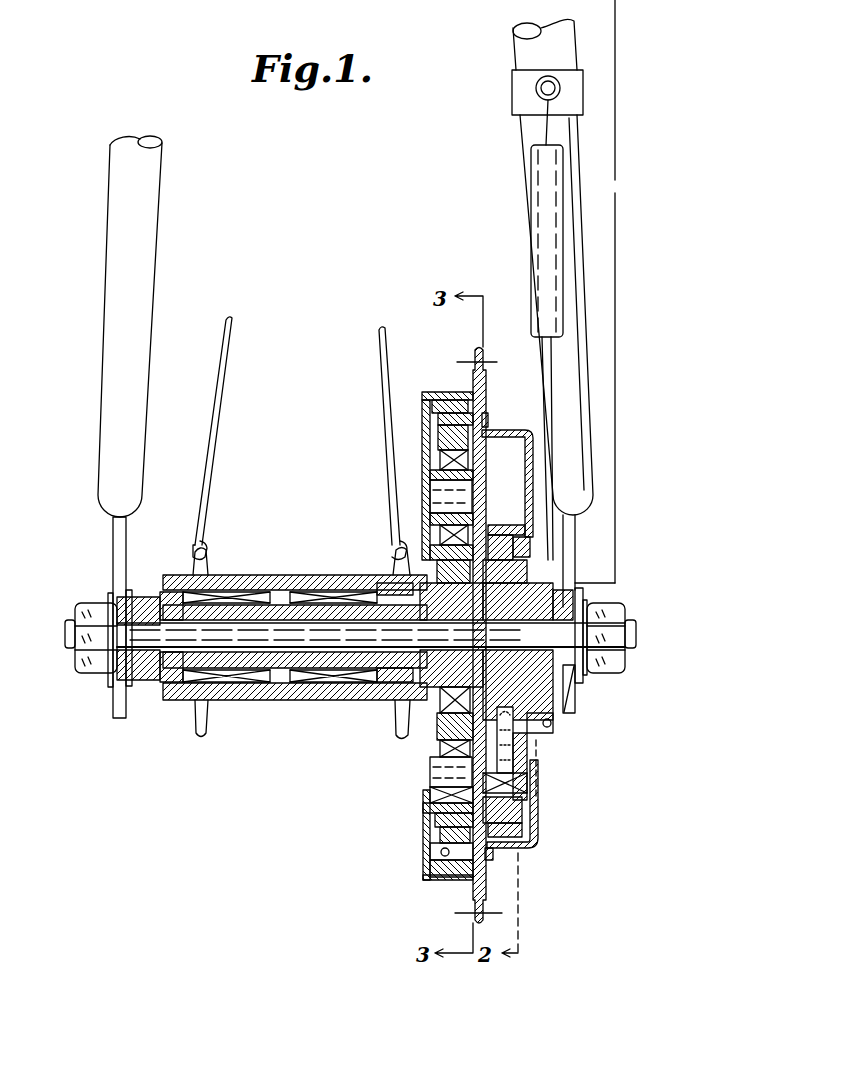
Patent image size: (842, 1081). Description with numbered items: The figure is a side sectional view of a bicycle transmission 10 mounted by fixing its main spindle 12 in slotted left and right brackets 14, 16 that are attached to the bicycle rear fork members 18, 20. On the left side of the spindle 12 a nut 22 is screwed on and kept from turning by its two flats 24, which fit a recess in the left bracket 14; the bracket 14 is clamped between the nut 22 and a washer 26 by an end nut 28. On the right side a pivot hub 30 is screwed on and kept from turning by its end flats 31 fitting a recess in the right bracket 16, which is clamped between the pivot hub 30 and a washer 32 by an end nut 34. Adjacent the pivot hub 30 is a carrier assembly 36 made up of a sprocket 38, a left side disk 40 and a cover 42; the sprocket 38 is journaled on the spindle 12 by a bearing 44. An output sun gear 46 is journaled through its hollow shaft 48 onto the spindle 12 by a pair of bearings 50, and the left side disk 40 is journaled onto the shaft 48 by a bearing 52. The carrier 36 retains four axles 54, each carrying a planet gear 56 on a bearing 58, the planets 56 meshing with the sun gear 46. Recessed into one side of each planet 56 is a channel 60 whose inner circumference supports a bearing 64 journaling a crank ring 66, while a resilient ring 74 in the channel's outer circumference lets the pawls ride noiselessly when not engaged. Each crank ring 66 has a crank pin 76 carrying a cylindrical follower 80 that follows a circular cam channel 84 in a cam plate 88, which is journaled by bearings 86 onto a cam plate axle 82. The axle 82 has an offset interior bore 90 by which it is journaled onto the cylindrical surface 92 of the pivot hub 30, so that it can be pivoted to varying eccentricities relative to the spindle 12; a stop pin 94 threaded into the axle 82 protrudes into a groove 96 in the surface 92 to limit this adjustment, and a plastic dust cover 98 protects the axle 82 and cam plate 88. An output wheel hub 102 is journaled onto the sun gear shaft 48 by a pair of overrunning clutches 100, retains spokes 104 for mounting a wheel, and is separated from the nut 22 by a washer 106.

The transmission 10 is at (291, 320).
The main spindle 12 is at (633, 630).
The left bracket 14 is at (118, 719).
The right bracket 16 is at (570, 696).
The rear fork member 18 is at (118, 188).
The rear fork member 20 is at (527, 53).
The nut 22 is at (149, 688).
The flats 24 is at (124, 688).
The washer 26 is at (110, 688).
The end nut 28 is at (95, 676).
The pivot hub 30 is at (565, 706).
The end flats 31 is at (580, 690).
The washer 32 is at (585, 683).
The end nut 34 is at (625, 662).
The carrier assembly 36 is at (418, 840).
The sprocket 38 is at (477, 351).
The left side disk 40 is at (440, 800).
The cover 42 is at (448, 880).
The bearing 44 is at (405, 705).
The output sun gear 46 is at (420, 713).
The hollow shaft 48 is at (250, 662).
The bearings 50 is at (208, 682).
The bearing 52 is at (390, 592).
The axle 54 is at (440, 785).
The planet gear 56 is at (440, 855).
The bearing 58 is at (440, 820).
The channel 60 is at (440, 425).
The bearing 64 is at (438, 463).
The crank ring 66 is at (450, 442).
The resilient ring 74 is at (428, 410).
The crank pin 76 is at (495, 537).
The cylindrical follower 80 is at (520, 525).
The cam plate axle 82 is at (523, 597).
The cam channel 84 is at (530, 830).
The bearings 86 is at (515, 784).
The cam plate 88 is at (527, 476).
The interior bore 90 is at (498, 592).
The cylindrical surface 92 is at (550, 728).
The stop pin 94 is at (540, 746).
The groove 96 is at (503, 707).
The dust cover 98 is at (540, 825).
The overrunning clutches 100 is at (238, 602).
The output wheel hub 102 is at (278, 575).
The spokes 104 is at (219, 428).
The washer 106 is at (164, 592).